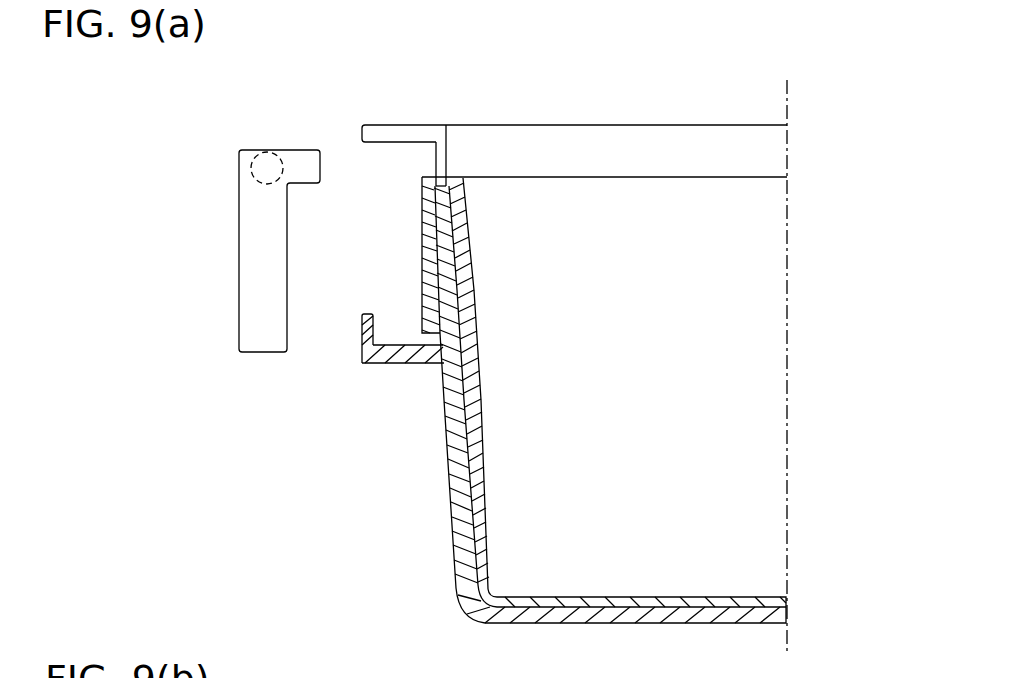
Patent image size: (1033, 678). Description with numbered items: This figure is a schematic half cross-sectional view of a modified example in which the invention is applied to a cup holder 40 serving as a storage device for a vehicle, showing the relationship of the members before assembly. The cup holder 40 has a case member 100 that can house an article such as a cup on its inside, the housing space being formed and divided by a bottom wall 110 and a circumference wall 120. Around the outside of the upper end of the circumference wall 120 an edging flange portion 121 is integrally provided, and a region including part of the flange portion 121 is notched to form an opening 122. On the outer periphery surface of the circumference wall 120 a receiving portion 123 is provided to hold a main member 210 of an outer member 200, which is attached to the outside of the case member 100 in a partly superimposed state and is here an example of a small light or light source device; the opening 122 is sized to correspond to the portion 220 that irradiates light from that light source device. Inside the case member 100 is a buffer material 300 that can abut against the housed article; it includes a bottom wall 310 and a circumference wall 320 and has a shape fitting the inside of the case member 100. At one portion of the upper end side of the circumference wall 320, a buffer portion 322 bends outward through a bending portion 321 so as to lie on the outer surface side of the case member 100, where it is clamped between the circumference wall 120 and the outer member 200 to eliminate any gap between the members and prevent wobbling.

The cup holder 40 is at (473, 120).
The case member 100 is at (698, 119).
The bottom wall 110 is at (583, 625).
The circumference wall 120 is at (447, 433).
The flange portion 121 is at (373, 125).
The opening 122 is at (447, 160).
The receiving portion 123 is at (363, 346).
The outer member 200 is at (276, 198).
The main member 210 is at (239, 282).
The portion irradiating a light 220 is at (312, 164).
The buffer material 300 is at (586, 373).
The bottom wall 310 is at (697, 592).
The circumference wall 320 is at (473, 486).
The bending portion 321 is at (437, 182).
The buffer portion 322 is at (422, 242).